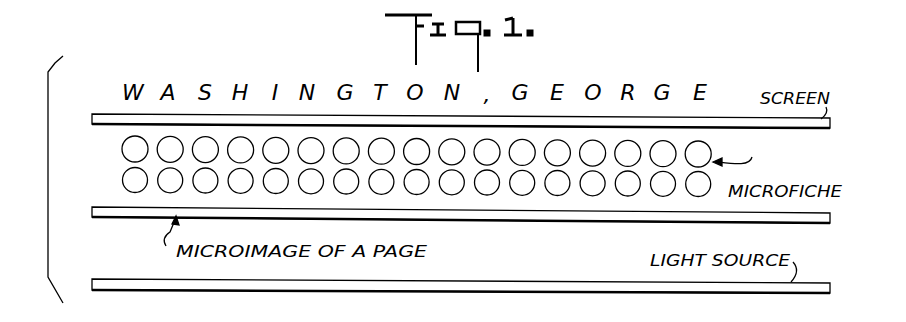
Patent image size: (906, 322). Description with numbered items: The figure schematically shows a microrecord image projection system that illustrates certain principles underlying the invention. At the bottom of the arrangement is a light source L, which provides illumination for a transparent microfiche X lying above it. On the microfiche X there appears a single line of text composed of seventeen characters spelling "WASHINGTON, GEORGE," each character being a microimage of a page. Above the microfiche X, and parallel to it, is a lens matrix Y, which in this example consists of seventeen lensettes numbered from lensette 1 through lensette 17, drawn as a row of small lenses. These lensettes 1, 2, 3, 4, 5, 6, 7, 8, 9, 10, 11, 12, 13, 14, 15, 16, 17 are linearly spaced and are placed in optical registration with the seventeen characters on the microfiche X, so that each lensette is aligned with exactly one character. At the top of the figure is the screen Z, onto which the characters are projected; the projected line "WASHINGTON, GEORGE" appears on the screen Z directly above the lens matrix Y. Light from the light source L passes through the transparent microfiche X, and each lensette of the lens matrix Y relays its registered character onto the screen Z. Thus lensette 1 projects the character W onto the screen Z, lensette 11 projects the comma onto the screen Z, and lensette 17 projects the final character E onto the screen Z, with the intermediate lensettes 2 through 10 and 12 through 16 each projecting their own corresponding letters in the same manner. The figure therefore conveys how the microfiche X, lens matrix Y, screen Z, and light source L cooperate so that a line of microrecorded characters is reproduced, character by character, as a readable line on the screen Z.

The lensette 1 is at (135, 164).
The lensette 2 is at (170, 164).
The lensette 3 is at (205, 165).
The lensette 4 is at (241, 165).
The lensette 5 is at (276, 165).
The lensette 6 is at (311, 166).
The lensette 7 is at (346, 166).
The lensette 8 is at (381, 166).
The lensette 9 is at (417, 167).
The lensette 10 is at (452, 167).
The lensette 11 is at (487, 167).
The lensette 12 is at (522, 167).
The lensette 13 is at (557, 168).
The lensette 14 is at (593, 168).
The lensette 15 is at (628, 168).
The lensette 16 is at (663, 169).
The lensette 17 is at (698, 169).
The transparent microfiche X is at (567, 212).
The lens matrix Y is at (110, 133).
The screen Z is at (725, 120).
The light source L is at (527, 284).